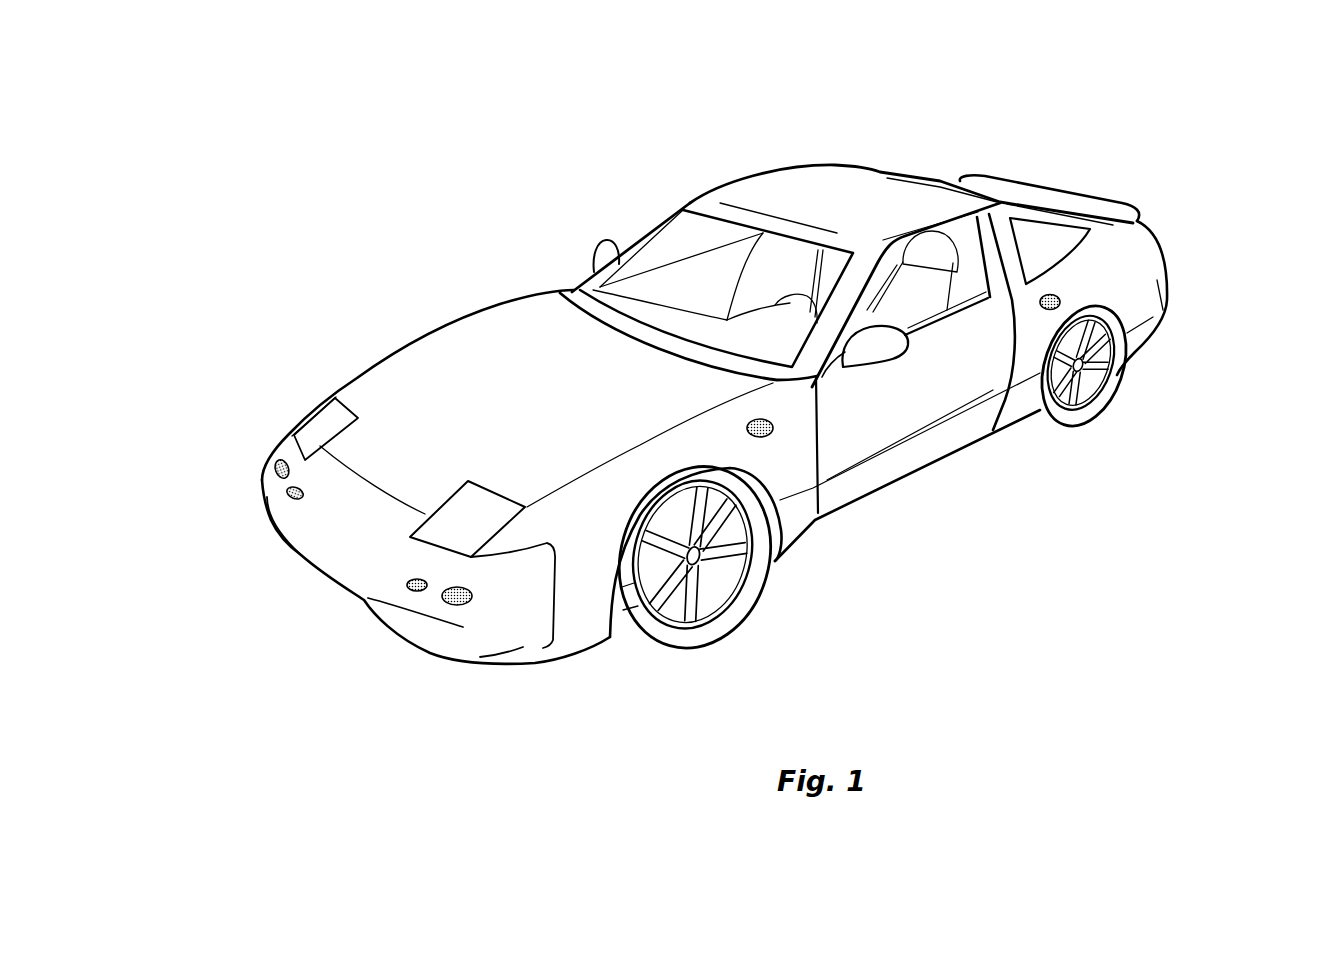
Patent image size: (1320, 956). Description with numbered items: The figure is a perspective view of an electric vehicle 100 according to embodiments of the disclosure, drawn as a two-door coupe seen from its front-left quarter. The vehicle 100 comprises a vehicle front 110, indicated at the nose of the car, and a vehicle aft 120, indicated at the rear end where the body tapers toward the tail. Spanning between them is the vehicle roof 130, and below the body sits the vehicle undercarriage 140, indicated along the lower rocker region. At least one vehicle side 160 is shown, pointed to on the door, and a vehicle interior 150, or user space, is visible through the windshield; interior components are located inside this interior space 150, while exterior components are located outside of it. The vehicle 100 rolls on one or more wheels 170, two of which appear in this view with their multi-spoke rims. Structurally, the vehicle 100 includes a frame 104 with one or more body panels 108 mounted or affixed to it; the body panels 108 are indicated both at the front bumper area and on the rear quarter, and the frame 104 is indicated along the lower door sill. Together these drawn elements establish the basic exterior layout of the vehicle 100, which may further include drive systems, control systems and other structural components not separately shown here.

The vehicle 100 is at (366, 133).
The frame 104 is at (923, 470).
The body panels 108 is at (315, 517).
The vehicle front 110 is at (286, 606).
The vehicle aft 120 is at (1156, 198).
The vehicle roof 130 is at (924, 170).
The vehicle undercarriage 140 is at (872, 515).
The vehicle interior 150 is at (656, 259).
The vehicle side 160 is at (951, 408).
The wheels 170 is at (723, 604).